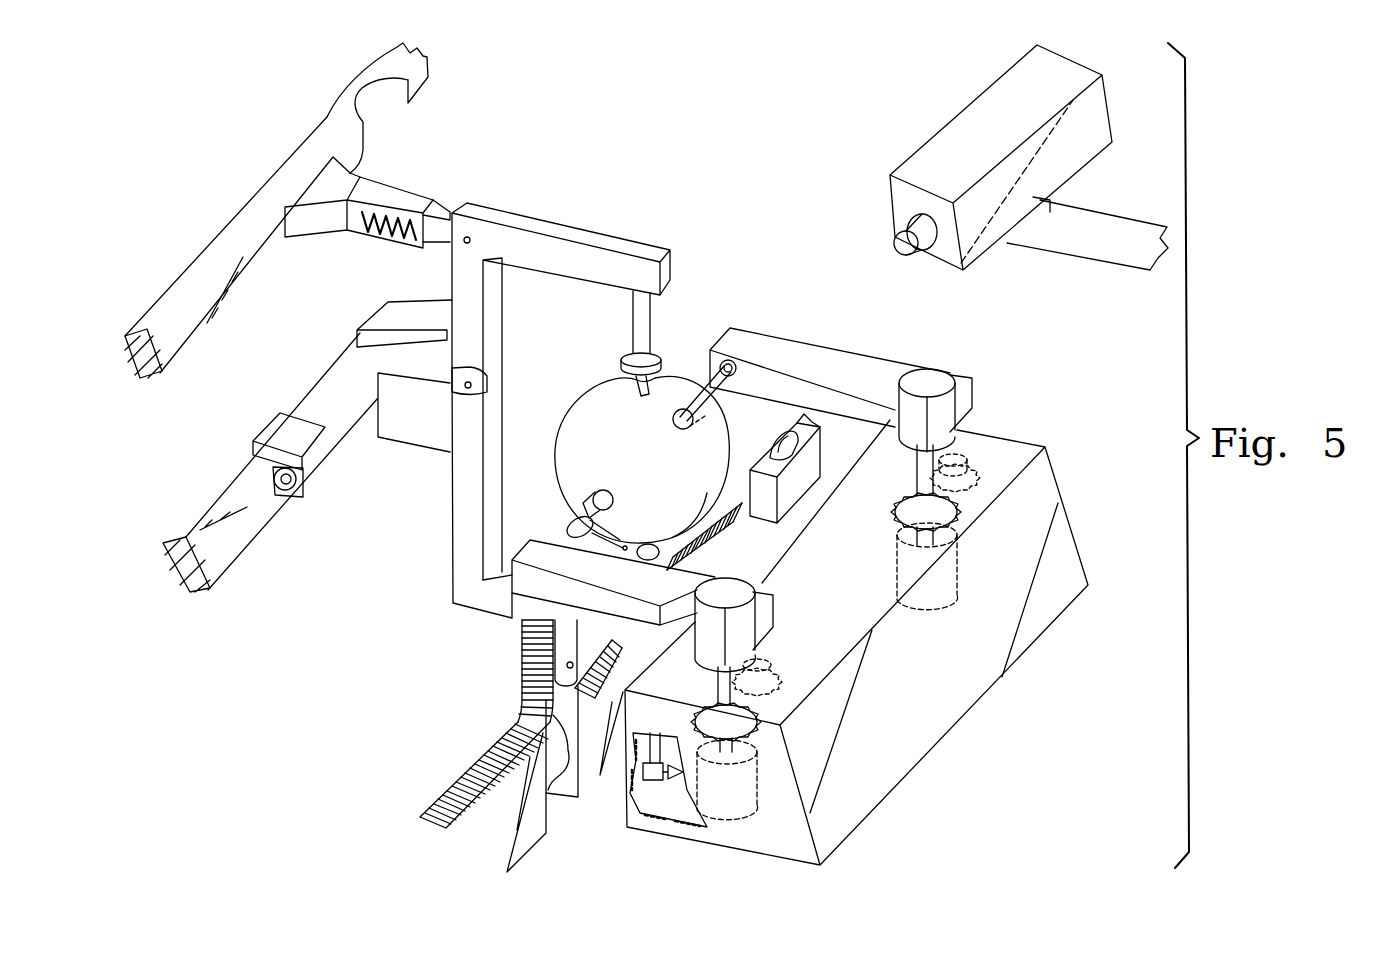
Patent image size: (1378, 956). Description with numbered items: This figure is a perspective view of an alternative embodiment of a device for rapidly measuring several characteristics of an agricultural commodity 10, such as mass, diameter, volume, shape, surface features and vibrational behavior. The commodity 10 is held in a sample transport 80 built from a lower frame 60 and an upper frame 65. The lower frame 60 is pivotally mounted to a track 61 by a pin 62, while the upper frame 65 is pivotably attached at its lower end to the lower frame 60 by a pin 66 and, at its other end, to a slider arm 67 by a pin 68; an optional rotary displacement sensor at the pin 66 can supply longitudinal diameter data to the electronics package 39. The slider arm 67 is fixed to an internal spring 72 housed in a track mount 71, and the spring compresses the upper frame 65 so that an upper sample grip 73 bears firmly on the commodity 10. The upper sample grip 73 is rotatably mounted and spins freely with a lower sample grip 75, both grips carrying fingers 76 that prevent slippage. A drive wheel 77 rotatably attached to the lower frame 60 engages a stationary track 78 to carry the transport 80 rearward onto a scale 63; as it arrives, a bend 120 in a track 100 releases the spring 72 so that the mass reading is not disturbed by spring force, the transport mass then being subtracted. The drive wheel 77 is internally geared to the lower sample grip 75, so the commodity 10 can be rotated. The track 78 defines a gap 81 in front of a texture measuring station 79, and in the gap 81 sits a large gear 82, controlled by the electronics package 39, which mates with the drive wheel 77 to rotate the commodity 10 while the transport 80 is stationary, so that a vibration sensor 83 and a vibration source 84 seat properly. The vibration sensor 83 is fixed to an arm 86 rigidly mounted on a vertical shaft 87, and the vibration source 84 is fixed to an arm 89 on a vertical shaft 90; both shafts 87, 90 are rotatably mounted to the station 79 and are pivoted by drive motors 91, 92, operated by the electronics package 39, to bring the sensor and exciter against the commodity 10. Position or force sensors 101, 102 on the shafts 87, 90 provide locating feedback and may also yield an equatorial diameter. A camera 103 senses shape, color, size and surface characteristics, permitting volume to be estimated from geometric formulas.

The agricultural commodity 10 is at (633, 473).
The electronics package 39 is at (667, 797).
The lower frame 60 is at (502, 420).
The track 61 is at (318, 377).
The pin 62 is at (285, 491).
The scale 63 is at (773, 445).
The upper frame 65 is at (502, 313).
The pin 66 is at (467, 388).
The slider arm 67 is at (435, 199).
The pin 68 is at (465, 243).
The track mount 71 is at (363, 175).
The internal spring 72 is at (373, 238).
The upper sample grip 73 is at (628, 352).
The lower sample grip 75 is at (593, 528).
The fingers 76 is at (653, 393).
The drive wheel 77 is at (520, 690).
The track 78 is at (492, 745).
The texture measuring station 79 is at (992, 757).
The sample transport 80 is at (393, 553).
The gap 81 is at (558, 803).
The large gear 82 is at (563, 740).
The vibration sensor 83 is at (702, 412).
The vibration source 84 is at (597, 493).
The arm 86 is at (798, 395).
The vertical shaft 87 is at (893, 443).
The arm 89 is at (588, 605).
The vertical shaft 90 is at (697, 643).
The drive motor 91 is at (895, 568).
The drive motor 92 is at (760, 790).
The track 100 is at (217, 233).
The position or force sensor 101 is at (986, 483).
The position or force sensor 102 is at (767, 668).
The camera 103 is at (913, 150).
The bend 120 is at (320, 82).